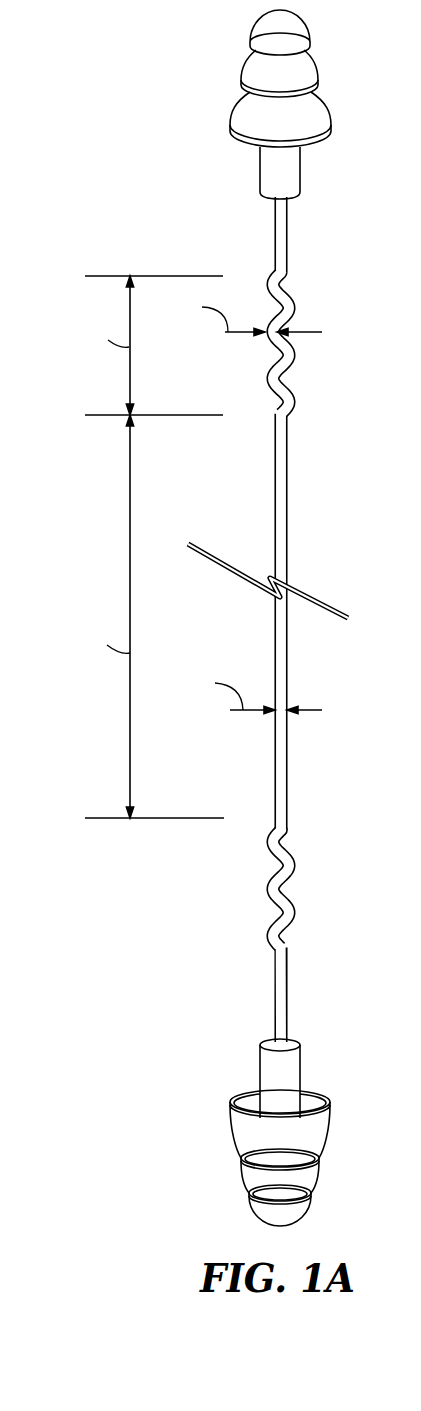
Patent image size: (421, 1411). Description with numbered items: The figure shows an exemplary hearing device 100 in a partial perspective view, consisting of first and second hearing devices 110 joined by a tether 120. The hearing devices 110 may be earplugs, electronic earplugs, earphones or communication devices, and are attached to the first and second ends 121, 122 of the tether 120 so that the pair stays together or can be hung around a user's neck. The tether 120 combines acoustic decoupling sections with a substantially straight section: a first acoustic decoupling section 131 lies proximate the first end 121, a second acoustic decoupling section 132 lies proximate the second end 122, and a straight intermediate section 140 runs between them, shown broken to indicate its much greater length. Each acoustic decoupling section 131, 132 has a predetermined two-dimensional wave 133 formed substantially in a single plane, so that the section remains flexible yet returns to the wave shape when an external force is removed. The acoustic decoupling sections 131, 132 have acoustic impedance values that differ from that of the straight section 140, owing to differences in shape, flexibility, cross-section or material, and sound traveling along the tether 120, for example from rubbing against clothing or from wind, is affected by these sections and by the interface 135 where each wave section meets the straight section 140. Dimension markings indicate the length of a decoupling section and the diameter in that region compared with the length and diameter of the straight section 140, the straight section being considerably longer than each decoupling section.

The hearing device 100 is at (178, 88).
The hearing devices 110 is at (300, 67).
The tether 120 is at (279, 619).
The first end 121 is at (282, 215).
The second end 122 is at (284, 1036).
The first acoustic decoupling section 131 is at (300, 310).
The second acoustic decoupling section 132 is at (299, 819).
The two-dimensional wave 133 is at (288, 610).
The interface 135 is at (275, 427).
The straight intermediate section 140 is at (276, 622).